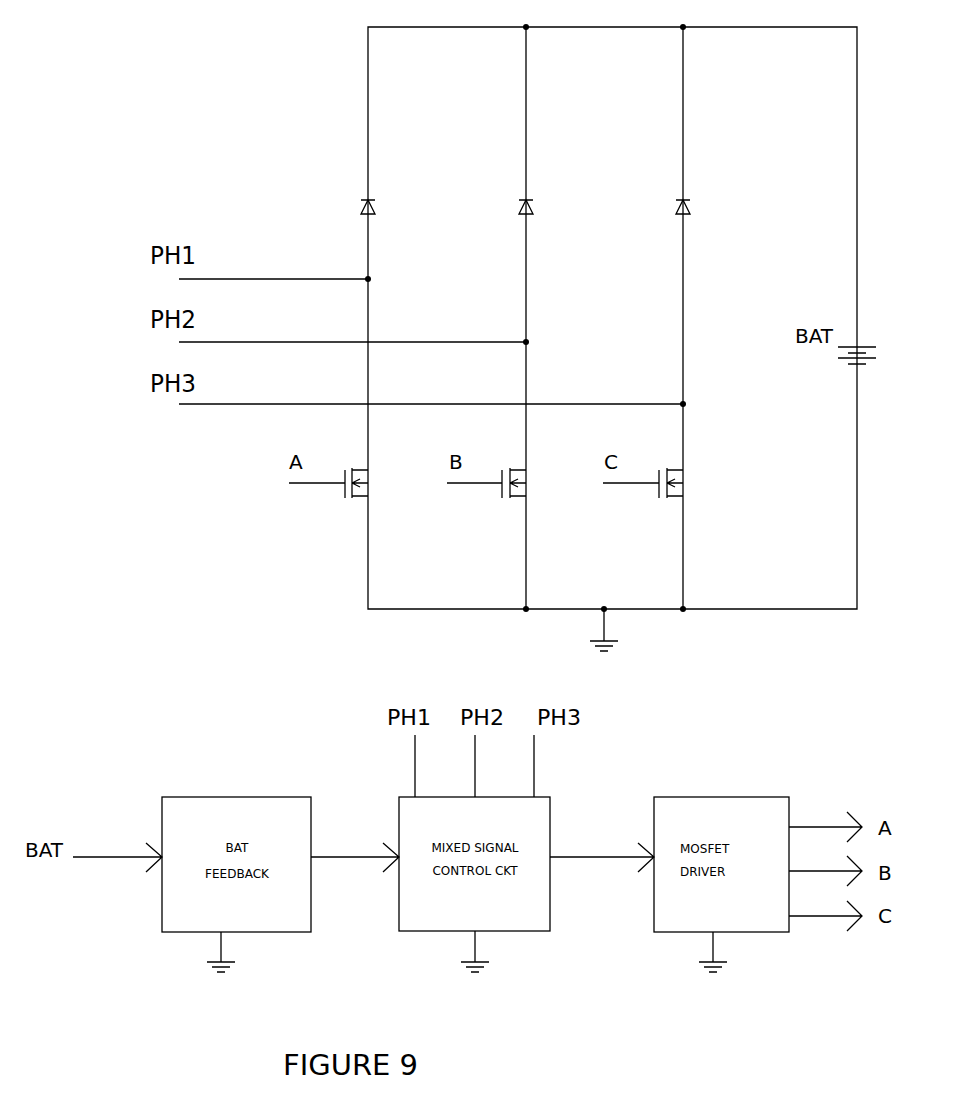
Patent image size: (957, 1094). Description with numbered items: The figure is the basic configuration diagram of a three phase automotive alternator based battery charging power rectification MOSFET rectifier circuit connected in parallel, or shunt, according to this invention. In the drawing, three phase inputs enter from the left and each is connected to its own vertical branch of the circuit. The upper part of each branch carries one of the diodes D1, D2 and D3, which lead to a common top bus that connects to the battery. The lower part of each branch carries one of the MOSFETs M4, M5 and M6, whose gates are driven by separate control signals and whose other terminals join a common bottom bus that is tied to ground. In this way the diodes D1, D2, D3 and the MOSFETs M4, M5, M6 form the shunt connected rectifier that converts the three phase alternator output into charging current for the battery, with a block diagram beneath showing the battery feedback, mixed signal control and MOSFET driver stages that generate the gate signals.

The diode D1 is at (383, 207).
The diode D2 is at (541, 207).
The diode D3 is at (698, 207).
The MOSFET M4 is at (344, 483).
The MOSFET M5 is at (500, 483).
The MOSFET M6 is at (657, 483).